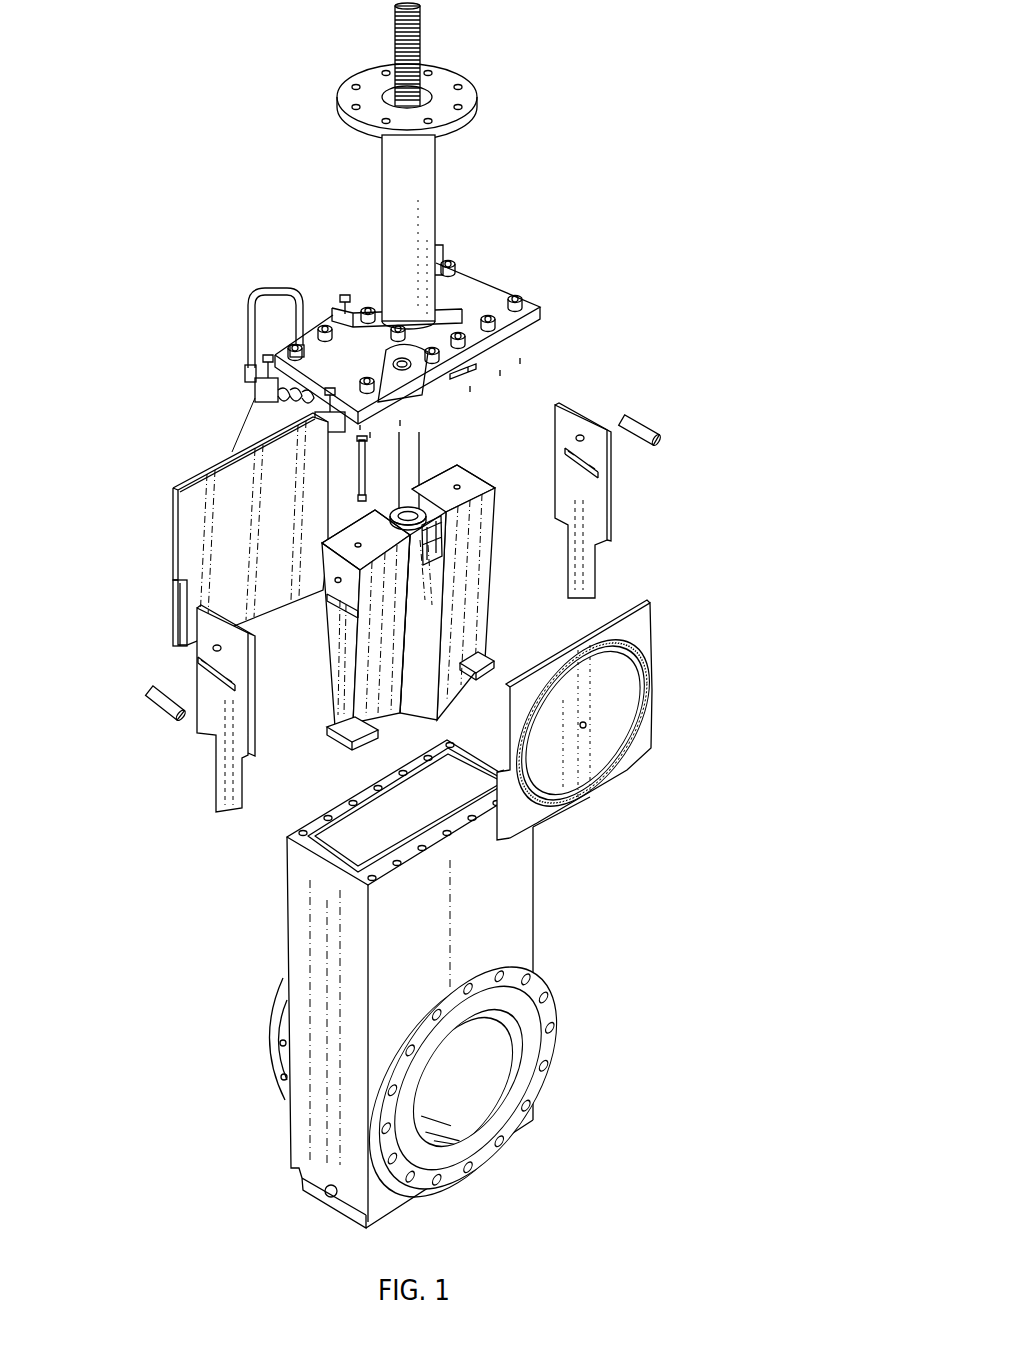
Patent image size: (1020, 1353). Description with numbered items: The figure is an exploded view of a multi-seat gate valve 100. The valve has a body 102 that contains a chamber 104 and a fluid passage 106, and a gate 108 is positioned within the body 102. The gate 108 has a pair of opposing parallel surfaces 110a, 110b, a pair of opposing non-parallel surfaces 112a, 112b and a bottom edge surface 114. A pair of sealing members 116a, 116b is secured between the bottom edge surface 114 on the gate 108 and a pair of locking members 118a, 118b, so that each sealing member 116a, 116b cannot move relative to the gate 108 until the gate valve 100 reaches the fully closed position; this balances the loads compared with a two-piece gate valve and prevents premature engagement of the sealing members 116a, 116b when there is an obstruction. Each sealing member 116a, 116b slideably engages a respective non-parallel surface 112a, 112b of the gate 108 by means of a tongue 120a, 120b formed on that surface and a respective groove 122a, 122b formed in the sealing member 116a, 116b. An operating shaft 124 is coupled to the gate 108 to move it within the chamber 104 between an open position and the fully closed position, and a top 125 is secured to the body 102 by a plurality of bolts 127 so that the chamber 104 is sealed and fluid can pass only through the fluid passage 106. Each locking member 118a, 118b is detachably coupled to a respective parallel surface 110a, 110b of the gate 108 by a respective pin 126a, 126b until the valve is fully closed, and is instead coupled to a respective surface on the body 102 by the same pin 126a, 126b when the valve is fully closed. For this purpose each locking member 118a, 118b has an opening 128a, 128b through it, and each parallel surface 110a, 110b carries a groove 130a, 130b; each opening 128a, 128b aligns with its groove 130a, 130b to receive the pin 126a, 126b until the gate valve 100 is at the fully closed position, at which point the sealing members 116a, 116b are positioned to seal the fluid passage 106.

The multi-seat gate valve 100 is at (728, 26).
The body 102 is at (407, 988).
The chamber 104 is at (357, 828).
The fluid passage 106 is at (472, 1053).
The gate 108 is at (410, 583).
The opposing parallel surface 110a is at (333, 660).
The opposing parallel surface 110b is at (493, 578).
The opposing non-parallel surface 112a is at (434, 478).
The opposing non-parallel surface 112b is at (485, 518).
The bottom edge surface 114 is at (339, 732).
The sealing member 116a is at (651, 632).
The sealing member 116b is at (203, 488).
The locking member 118a is at (213, 765).
The locking member 118b is at (612, 506).
The tongue 120a is at (426, 690).
The tongue 120b is at (368, 512).
The groove 122a is at (587, 630).
The groove 122b is at (232, 446).
The operating shaft 124 is at (421, 45).
The top 125 is at (475, 286).
The pin 126a is at (149, 709).
The pin 126b is at (646, 420).
The bolts 127 is at (523, 298).
The opening 128a is at (216, 668).
The opening 128b is at (566, 452).
The groove 130a is at (328, 608).
The groove 130b is at (497, 531).